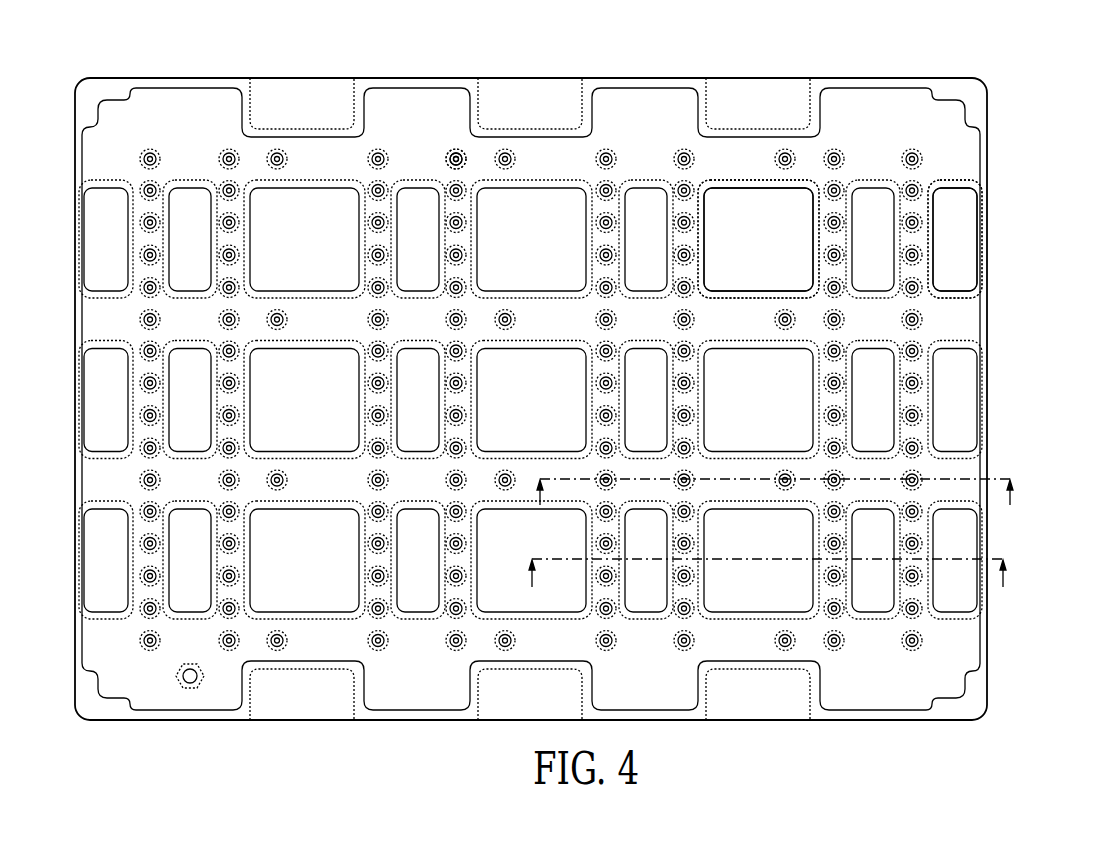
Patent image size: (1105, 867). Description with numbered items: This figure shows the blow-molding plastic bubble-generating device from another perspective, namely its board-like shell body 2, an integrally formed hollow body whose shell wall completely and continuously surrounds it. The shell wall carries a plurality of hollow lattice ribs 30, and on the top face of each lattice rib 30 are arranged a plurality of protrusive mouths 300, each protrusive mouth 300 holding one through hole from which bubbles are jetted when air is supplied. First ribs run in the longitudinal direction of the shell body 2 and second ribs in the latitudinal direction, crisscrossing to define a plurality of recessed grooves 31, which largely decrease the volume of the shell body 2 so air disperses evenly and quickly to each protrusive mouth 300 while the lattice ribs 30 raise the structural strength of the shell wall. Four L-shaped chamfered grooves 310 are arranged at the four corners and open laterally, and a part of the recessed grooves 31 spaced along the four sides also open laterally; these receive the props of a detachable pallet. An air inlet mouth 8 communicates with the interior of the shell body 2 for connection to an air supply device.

The board-like shell body 2 is at (175, 112).
The protrusive mouth 300 is at (456, 157).
The lattice rib 30 is at (698, 173).
The L-shaped chamfered groove 310 is at (982, 104).
The recessed groove 31 is at (955, 248).
The air inlet mouth 8 is at (185, 690).